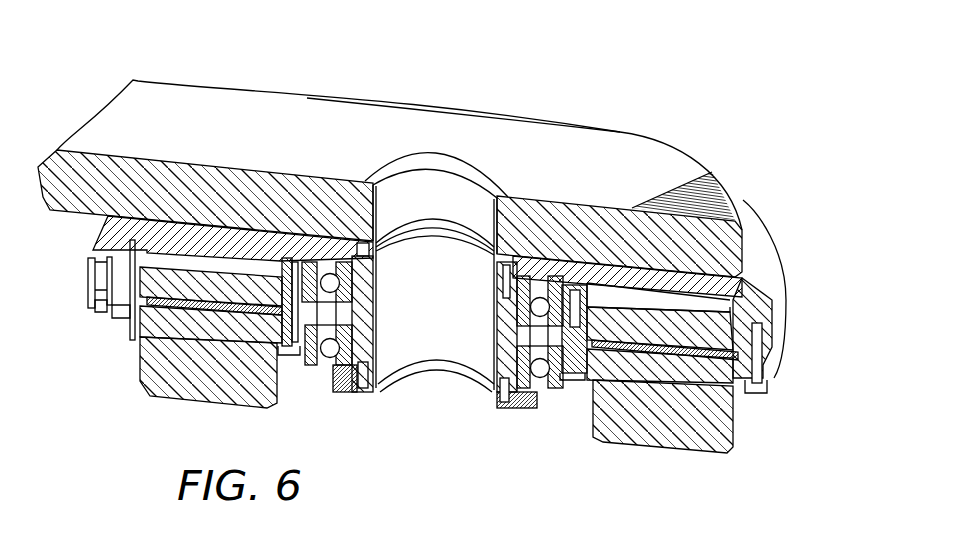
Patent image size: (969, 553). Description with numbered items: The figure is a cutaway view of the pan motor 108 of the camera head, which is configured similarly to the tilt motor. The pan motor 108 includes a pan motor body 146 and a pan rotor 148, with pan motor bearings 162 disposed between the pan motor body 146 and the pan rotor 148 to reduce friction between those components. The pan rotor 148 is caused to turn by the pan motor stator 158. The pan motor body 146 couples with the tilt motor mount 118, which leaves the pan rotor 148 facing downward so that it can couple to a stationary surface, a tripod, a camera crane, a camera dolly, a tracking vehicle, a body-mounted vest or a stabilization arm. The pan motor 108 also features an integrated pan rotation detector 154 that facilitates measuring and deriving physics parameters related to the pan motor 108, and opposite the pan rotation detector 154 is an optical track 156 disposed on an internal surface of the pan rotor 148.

The pan motor 108 is at (763, 140).
The tilt motor mount 118 is at (162, 97).
The pan motor body 146 is at (768, 253).
The pan rotor 148 is at (157, 284).
The pan rotation detector 154 is at (190, 250).
The optical track 156 is at (233, 255).
The pan motor stator 158 is at (183, 303).
The pan motor bearings 162 is at (347, 300).